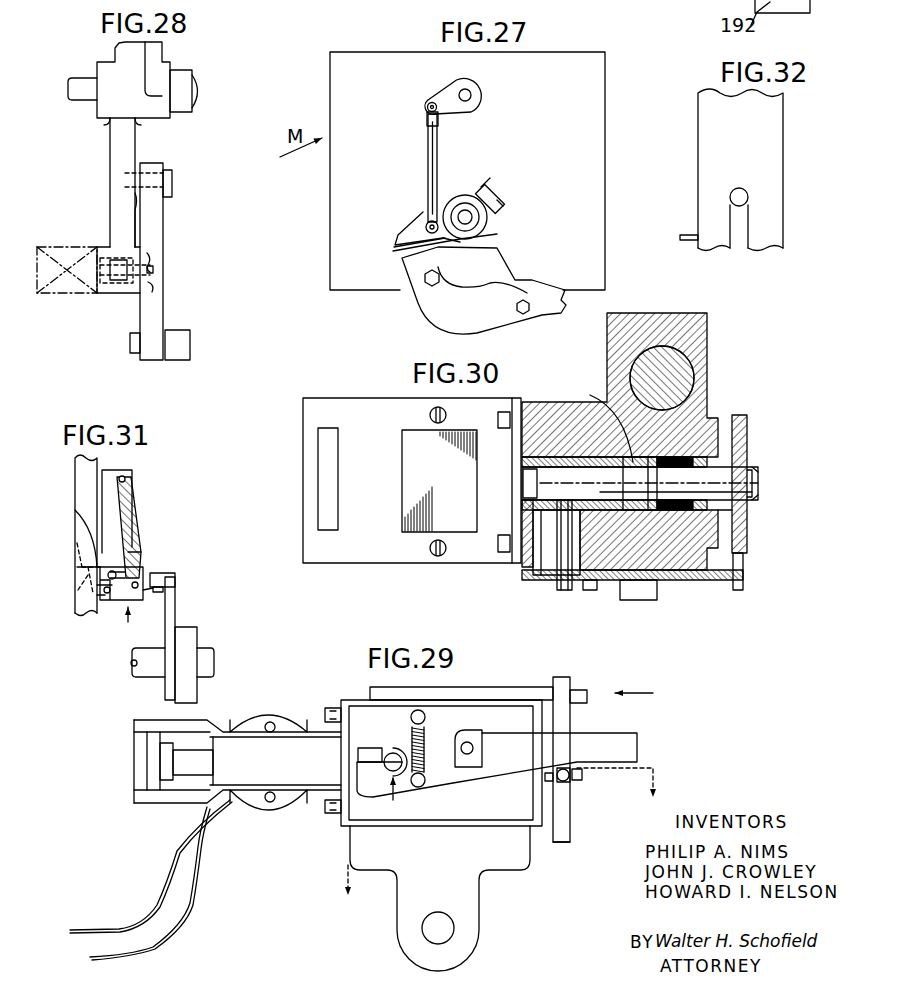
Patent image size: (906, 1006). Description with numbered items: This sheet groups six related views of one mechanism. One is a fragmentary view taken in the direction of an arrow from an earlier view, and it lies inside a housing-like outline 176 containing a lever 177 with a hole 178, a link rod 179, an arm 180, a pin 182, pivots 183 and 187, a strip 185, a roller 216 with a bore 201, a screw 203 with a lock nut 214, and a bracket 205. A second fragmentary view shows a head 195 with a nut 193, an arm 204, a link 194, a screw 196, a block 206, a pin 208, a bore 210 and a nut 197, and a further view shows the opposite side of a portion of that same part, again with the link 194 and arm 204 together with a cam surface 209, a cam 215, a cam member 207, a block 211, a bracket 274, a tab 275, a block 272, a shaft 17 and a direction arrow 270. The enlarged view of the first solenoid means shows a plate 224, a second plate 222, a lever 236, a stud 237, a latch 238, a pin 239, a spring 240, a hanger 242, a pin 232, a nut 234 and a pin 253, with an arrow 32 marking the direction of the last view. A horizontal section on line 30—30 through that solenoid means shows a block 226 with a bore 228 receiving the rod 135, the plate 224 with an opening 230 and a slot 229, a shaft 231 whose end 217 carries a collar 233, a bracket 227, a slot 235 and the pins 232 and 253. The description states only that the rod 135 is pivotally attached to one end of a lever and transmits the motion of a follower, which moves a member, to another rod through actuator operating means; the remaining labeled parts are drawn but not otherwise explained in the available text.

In FIG. 31, the shaft 17 is at (145, 665).
In FIG. 29, the section line 30 is at (493, 821).
In FIG. 29, the arrow 32 is at (649, 693).
In FIG. 30, the rod 135 is at (680, 368).
In FIG. 27, the housing 176 is at (422, 62).
In FIG. 27, the lever 177 is at (443, 95).
In FIG. 27, the pivot hole 178 is at (470, 95).
In FIG. 27, the link rod 179 is at (437, 155).
In FIG. 27, the arm 180 is at (409, 232).
In FIG. 27, the pin 182 is at (470, 219).
In FIG. 27, the pivot pin 183 is at (428, 107).
In FIG. 27, the strip 185 is at (423, 248).
In FIG. 27, the pivot pin 187 is at (431, 220).
In FIG. 28, the nut 193 is at (200, 91).
In FIG. 28, the link 194 is at (155, 309).
In FIG. 31, the link 194 is at (80, 483).
In FIG. 28, the head 195 is at (157, 56).
In FIG. 28, the screw 196 is at (168, 183).
In FIG. 28, the nut 197 is at (181, 343).
In FIG. 27, the bore 201 is at (495, 211).
In FIG. 27, the screw 203 is at (482, 192).
In FIG. 28, the arm 204 is at (122, 153).
In FIG. 31, the arm 204 is at (132, 480).
In FIG. 27, the bracket 205 is at (497, 248).
In FIG. 28, the block 206 is at (117, 297).
In FIG. 31, the cam member 207 is at (134, 530).
In FIG. 28, the pin 208 is at (158, 265).
In FIG. 31, the pin 208 is at (88, 591).
In FIG. 31, the cam surface 209 is at (77, 512).
In FIG. 28, the bore 210 is at (153, 273).
In FIG. 31, the bore 210 is at (77, 545).
In FIG. 31, the block 211 is at (119, 602).
In FIG. 27, the lock nut 214 is at (499, 203).
In FIG. 31, the cam 215 is at (130, 505).
In FIG. 27, the roller 216 is at (462, 195).
In FIG. 30, the shaft end 217 is at (530, 478).
In FIG. 32, the plate 222 is at (770, 193).
In FIG. 30, the plate 222 is at (748, 456).
In FIG. 29, the plate 222 is at (563, 720).
In FIG. 30, the plate 224 is at (460, 578).
In FIG. 29, the plate 224 is at (318, 718).
In FIG. 30, the block 226 is at (703, 372).
In FIG. 30, the bracket 227 is at (543, 555).
In FIG. 30, the bore 228 is at (595, 418).
In FIG. 30, the slot 229 is at (500, 538).
In FIG. 30, the opening 230 is at (418, 481).
In FIG. 29, the opening 230 is at (286, 798).
In FIG. 32, the shaft 231 is at (745, 192).
In FIG. 30, the shaft 231 is at (728, 483).
In FIG. 29, the shaft 231 is at (561, 854).
In FIG. 30, the pin 232 is at (560, 583).
In FIG. 29, the pin 232 is at (396, 753).
In FIG. 30, the collar 233 is at (650, 478).
In FIG. 30, the nut 234 is at (758, 498).
In FIG. 29, the nut 234 is at (575, 774).
In FIG. 32, the slot 235 is at (752, 228).
In FIG. 30, the slot 235 is at (746, 518).
In FIG. 30, the lever 236 is at (707, 582).
In FIG. 29, the lever 236 is at (457, 776).
In FIG. 29, the stud 237 is at (472, 746).
In FIG. 29, the latch 238 is at (368, 750).
In FIG. 29, the pin 239 is at (405, 800).
In FIG. 29, the spring 240 is at (426, 756).
In FIG. 29, the hanger 242 is at (480, 942).
In FIG. 32, the pin 253 is at (690, 235).
In FIG. 30, the pin 253 is at (740, 563).
In FIG. 29, the pin 253 is at (573, 784).
In FIG. 31, the direction arrow 270 is at (131, 624).
In FIG. 31, the block 272 is at (188, 637).
In FIG. 31, the bracket 274 is at (160, 575).
In FIG. 31, the tab 275 is at (163, 589).